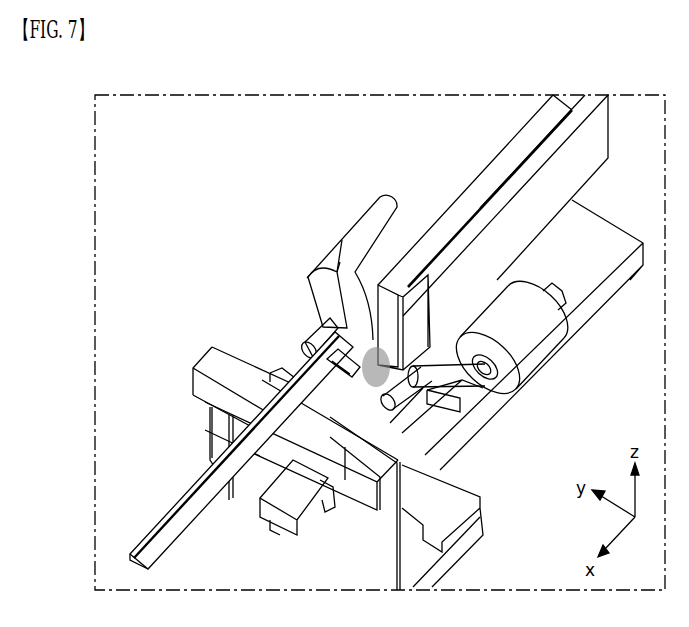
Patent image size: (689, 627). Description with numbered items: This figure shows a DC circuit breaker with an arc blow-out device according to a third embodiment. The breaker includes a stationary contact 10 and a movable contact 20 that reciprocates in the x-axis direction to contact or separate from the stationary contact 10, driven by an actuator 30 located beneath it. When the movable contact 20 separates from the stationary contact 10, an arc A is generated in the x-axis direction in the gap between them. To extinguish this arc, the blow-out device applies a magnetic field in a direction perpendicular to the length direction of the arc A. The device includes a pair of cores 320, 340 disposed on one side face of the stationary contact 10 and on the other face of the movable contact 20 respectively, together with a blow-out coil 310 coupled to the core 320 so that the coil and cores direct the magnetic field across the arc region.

The stationary contact 10 is at (455, 218).
The movable contact 20 is at (302, 368).
The actuator 30 is at (318, 570).
The blow-out coil 310 is at (530, 355).
The core 320 is at (468, 383).
The core 340 is at (308, 277).
The arc A is at (375, 347).